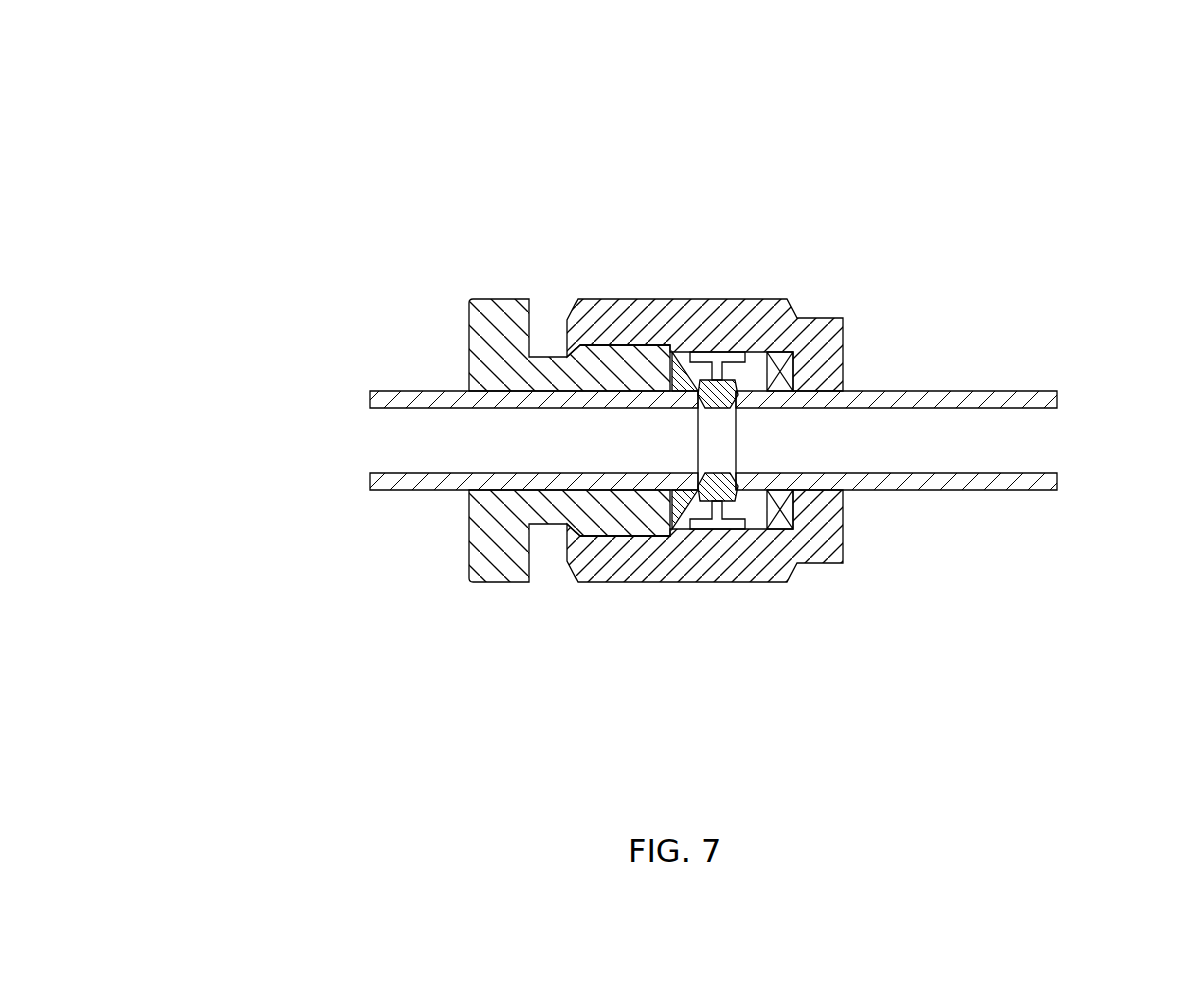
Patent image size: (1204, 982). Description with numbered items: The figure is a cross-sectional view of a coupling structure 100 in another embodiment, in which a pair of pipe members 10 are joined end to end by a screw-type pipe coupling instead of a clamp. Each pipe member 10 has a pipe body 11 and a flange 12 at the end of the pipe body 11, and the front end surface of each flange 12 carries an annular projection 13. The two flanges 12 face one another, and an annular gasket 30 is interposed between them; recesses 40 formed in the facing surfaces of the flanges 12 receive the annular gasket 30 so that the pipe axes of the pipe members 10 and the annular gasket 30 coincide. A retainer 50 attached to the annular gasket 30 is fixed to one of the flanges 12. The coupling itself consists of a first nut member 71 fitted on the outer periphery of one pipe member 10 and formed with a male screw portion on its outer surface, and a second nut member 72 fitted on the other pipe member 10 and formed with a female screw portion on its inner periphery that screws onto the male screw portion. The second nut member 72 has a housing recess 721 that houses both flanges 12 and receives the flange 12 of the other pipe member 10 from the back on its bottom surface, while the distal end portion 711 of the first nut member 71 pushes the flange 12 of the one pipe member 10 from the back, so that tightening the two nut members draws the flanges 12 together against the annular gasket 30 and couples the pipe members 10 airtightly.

The coupling structure 100 is at (278, 141).
The pipe member 10 is at (352, 371).
The pipe body 11 is at (400, 492).
The flange 12 is at (685, 532).
The annular projection 13 is at (698, 400).
The annular gasket 30 is at (665, 348).
The recess 40 is at (712, 405).
The retainer 50 is at (785, 365).
The first nut member 71 is at (500, 298).
The distal end portion 711 is at (655, 535).
The second nut member 72 is at (755, 300).
The housing recess 721 is at (735, 352).